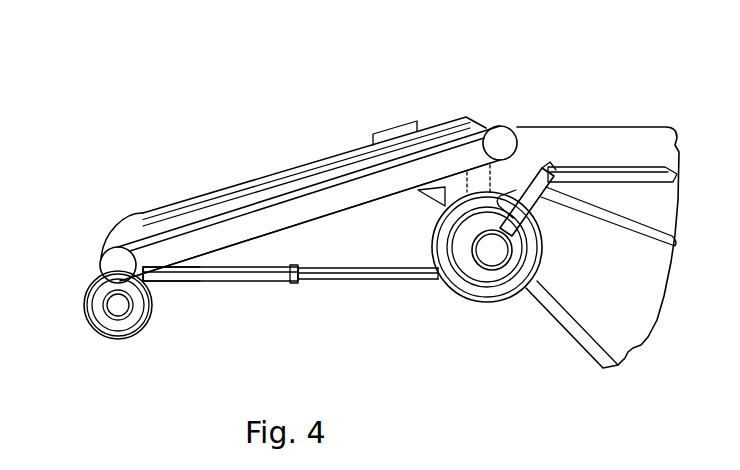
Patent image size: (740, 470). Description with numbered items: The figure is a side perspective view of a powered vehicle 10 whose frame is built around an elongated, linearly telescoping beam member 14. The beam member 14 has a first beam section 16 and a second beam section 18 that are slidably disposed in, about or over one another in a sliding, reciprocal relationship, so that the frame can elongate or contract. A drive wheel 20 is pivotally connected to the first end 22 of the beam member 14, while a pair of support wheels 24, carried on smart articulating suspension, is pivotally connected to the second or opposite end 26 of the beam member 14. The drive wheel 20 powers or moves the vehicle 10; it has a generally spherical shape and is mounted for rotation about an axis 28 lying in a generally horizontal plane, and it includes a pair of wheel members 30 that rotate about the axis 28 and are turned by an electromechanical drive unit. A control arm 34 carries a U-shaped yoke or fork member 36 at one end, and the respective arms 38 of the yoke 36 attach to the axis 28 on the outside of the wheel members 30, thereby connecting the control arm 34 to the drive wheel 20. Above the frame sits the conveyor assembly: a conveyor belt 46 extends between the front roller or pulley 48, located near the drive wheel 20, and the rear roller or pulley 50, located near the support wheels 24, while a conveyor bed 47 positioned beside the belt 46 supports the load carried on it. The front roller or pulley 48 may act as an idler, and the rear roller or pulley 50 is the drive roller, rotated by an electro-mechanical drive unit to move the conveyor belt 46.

The powered vehicle 10 is at (296, 146).
The beam member 14 is at (328, 266).
The first beam section 16 is at (335, 283).
The second beam section 18 is at (237, 284).
The drive wheel 20 is at (538, 262).
The first end 22 is at (422, 284).
The support wheels 24 is at (97, 334).
The second end 26 is at (173, 283).
The axis 28 is at (503, 294).
The wheel members 30 is at (533, 171).
The control arm 34 is at (609, 170).
The yoke 36 is at (541, 217).
The arms 38 is at (541, 222).
The conveyor belt 46 is at (120, 257).
The conveyor bed 47 is at (197, 237).
The front roller or pulley 48 is at (519, 128).
The rear roller or pulley 50 is at (110, 266).